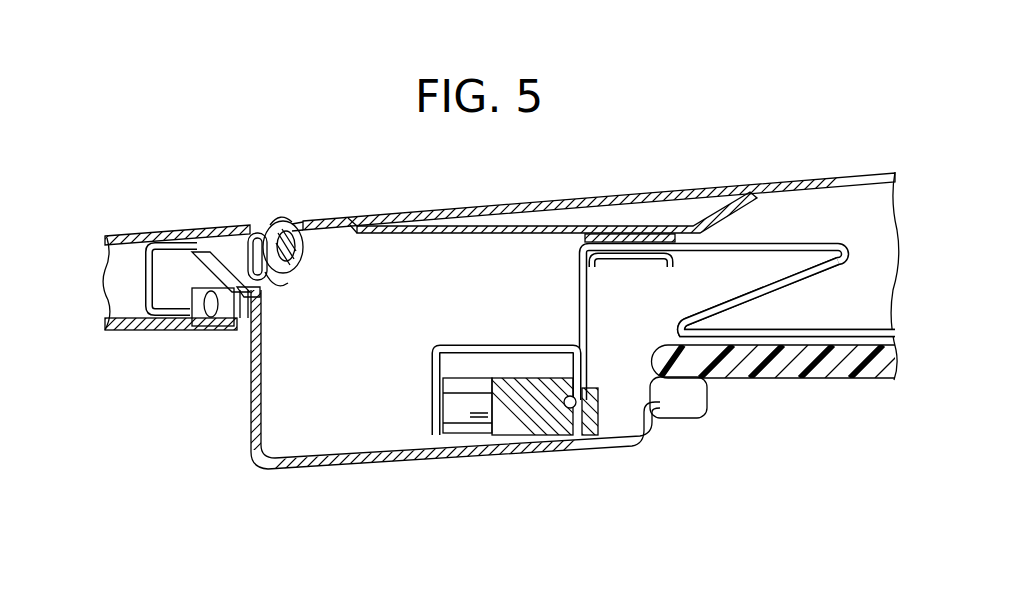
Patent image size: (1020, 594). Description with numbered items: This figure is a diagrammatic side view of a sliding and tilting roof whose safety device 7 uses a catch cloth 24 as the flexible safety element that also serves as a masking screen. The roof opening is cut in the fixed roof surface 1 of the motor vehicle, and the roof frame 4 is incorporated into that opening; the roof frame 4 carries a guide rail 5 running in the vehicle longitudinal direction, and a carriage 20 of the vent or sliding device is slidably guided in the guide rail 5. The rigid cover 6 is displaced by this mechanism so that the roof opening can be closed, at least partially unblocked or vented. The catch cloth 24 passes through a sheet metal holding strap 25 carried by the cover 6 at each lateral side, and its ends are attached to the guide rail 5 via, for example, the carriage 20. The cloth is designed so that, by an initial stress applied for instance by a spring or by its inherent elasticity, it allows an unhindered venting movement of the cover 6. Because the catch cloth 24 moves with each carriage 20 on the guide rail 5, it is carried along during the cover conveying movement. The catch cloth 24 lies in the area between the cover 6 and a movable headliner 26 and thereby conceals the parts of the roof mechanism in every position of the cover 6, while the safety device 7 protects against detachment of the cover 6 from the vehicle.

The fixed roof surface 1 is at (182, 236).
The roof frame 4 is at (313, 470).
The guide rail 5 is at (533, 414).
The cover 6 is at (390, 214).
The safety device 7 is at (781, 222).
The carriage 20 is at (433, 378).
The catch cloth 24 is at (760, 287).
The sheet metal holding strap 25 is at (630, 230).
The movable headliner 26 is at (842, 360).